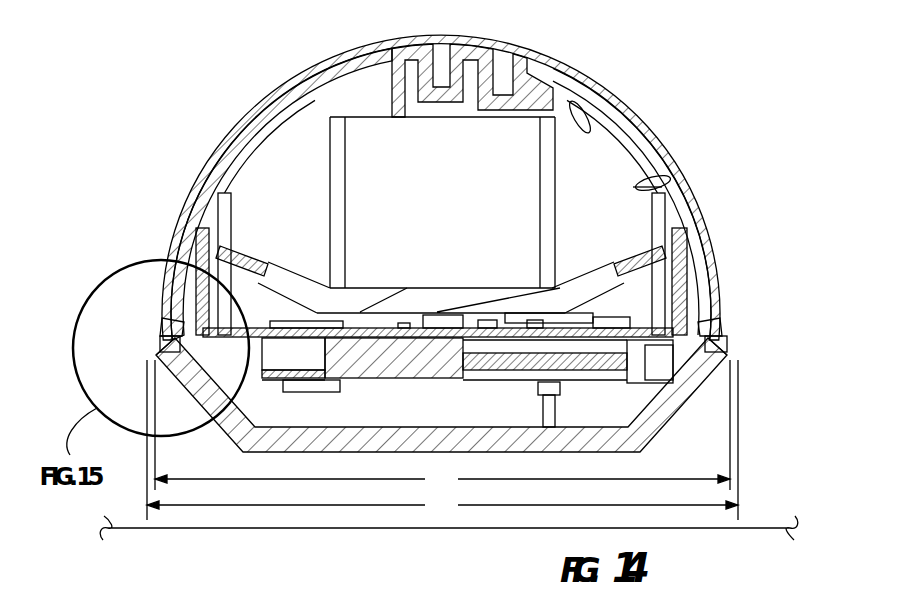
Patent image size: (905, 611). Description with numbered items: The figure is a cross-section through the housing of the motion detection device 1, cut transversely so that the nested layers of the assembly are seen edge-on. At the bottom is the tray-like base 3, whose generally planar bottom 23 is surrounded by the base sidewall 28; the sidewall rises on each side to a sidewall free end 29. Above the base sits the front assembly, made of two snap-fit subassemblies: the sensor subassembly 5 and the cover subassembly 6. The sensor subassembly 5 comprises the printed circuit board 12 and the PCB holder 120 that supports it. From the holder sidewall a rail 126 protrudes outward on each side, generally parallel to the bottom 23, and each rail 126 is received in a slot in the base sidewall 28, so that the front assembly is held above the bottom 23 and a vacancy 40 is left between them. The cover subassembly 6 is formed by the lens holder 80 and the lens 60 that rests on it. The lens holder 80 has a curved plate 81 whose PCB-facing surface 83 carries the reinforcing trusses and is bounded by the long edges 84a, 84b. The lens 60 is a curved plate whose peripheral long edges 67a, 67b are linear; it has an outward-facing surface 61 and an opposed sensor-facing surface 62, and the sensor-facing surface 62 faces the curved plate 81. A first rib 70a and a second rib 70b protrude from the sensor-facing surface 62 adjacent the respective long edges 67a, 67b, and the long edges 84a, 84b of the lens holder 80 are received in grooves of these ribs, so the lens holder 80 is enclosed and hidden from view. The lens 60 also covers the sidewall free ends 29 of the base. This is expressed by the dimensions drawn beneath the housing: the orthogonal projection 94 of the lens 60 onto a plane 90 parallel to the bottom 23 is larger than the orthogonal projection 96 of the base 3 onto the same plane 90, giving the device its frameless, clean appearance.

The motion detection device 1 is at (184, 84).
The base 3 is at (428, 406).
The sensor subassembly 5 is at (372, 233).
The cover subassembly 6 is at (473, 187).
The printed circuit board 12 is at (352, 330).
The bottom 23 is at (350, 430).
The base sidewall 28 is at (207, 404).
The sidewall free end 29 is at (156, 354).
The vacancy 40 is at (421, 403).
The lens 60 is at (640, 147).
The outward-facing surface 61 is at (693, 212).
The sensor-facing surface 62 is at (665, 178).
The first long edge 67a is at (730, 360).
The second long edge 67b is at (152, 362).
The first rib 70a is at (697, 303).
The second rib 70b is at (166, 330).
The lens holder 80 is at (623, 138).
The curved plate 81 is at (690, 231).
The PCB-facing surface 83 is at (572, 130).
The long edge 84a is at (720, 335).
The long edge 84b is at (163, 333).
The plane 90 is at (760, 528).
The orthogonal projection 94 is at (442, 440).
The orthogonal projection 96 is at (442, 426).
The PCB holder 120 is at (413, 352).
The rail 126 is at (263, 257).